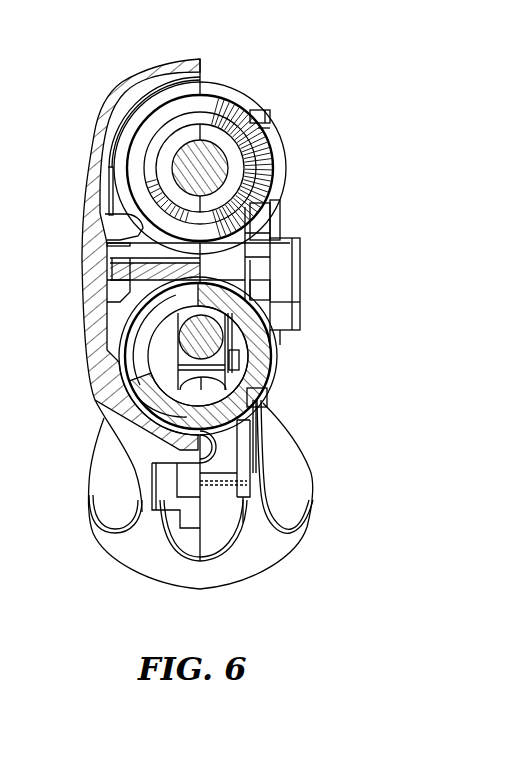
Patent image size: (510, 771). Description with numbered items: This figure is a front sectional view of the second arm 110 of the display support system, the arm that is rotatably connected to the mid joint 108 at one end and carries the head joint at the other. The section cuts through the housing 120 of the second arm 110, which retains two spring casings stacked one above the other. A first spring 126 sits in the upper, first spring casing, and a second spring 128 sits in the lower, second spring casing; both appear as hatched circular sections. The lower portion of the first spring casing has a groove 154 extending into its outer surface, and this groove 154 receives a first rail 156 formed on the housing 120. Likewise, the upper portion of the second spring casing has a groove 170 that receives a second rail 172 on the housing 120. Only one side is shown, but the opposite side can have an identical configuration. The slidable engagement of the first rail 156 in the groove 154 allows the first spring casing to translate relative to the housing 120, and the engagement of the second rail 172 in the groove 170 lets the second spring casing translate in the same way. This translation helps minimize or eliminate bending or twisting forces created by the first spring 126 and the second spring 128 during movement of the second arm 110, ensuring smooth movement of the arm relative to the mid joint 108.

The mid joint 108 is at (332, 519).
The second arm 110 is at (360, 162).
The housing 120 is at (152, 47).
The first spring 126 is at (237, 110).
The second spring 128 is at (271, 358).
The groove 154 is at (112, 212).
The first rail 156 is at (114, 229).
The groove 170 is at (200, 270).
The second rail 172 is at (117, 305).